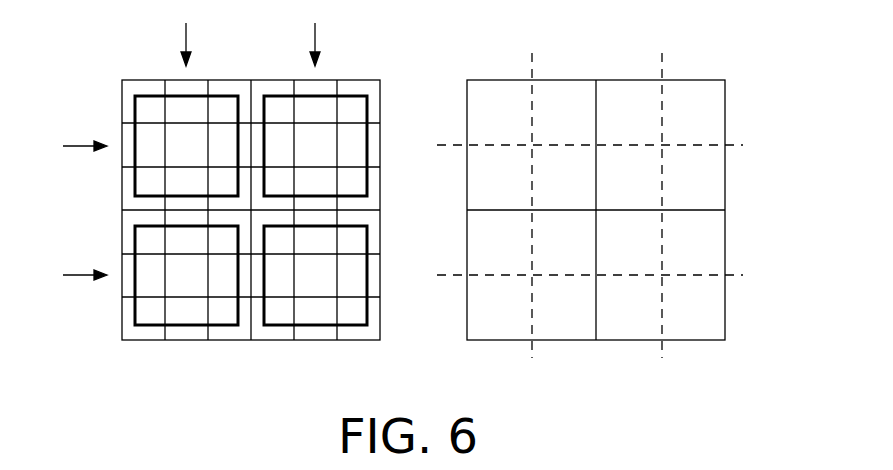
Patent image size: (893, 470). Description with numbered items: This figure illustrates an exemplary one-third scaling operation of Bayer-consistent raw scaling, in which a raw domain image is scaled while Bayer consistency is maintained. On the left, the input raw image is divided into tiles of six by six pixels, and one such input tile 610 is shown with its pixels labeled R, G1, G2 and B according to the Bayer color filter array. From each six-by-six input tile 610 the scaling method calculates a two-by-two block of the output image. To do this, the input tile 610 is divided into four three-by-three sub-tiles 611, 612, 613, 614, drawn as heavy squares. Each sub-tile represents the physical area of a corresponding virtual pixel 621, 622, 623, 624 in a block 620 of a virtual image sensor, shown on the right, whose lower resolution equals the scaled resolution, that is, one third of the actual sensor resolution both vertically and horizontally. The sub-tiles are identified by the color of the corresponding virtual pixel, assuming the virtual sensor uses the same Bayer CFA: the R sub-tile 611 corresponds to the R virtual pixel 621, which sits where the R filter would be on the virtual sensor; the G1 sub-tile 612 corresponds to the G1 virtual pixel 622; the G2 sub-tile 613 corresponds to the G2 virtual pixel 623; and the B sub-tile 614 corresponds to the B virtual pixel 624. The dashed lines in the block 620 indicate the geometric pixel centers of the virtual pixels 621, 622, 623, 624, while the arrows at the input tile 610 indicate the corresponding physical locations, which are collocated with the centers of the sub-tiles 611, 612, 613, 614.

The input tile 610 is at (216, 215).
The R sub-tile 611 is at (150, 96).
The G1 sub-tile 612 is at (283, 96).
The G2 sub-tile 613 is at (152, 326).
The B sub-tile 614 is at (280, 326).
The block of virtual image sensor 620 is at (584, 212).
The R virtual pixel 621 is at (510, 80).
The G1 virtual pixel 622 is at (640, 80).
The G2 virtual pixel 623 is at (567, 340).
The B virtual pixel 624 is at (697, 340).